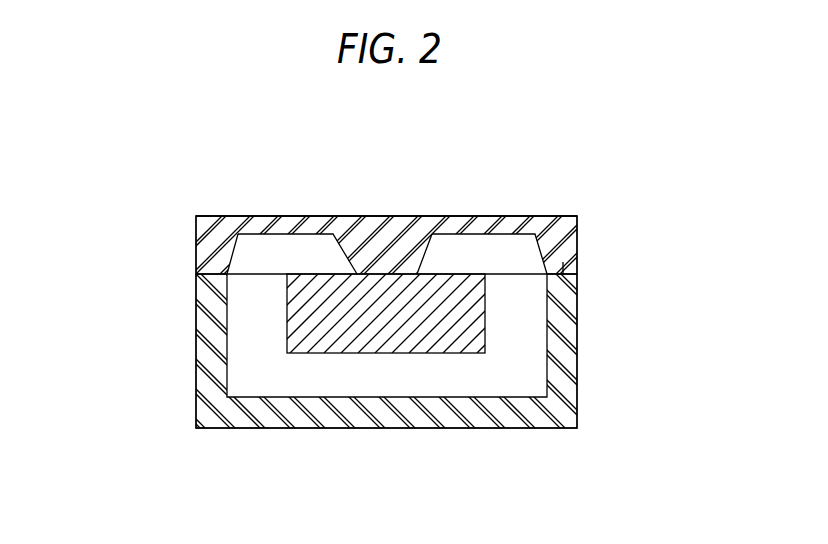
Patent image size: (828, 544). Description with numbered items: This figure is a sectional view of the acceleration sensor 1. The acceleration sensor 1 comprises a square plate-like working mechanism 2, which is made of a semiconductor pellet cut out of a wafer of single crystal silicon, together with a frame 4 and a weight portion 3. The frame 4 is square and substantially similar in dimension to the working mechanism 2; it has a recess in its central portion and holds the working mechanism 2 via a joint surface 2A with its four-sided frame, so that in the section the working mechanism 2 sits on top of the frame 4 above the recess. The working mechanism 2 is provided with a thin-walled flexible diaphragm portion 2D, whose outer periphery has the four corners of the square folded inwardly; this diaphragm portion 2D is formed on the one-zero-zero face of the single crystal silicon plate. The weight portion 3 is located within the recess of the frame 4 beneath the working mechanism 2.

The acceleration sensor 1 is at (554, 172).
The working mechanism 2 is at (330, 210).
The joint surface 2A is at (213, 273).
The diaphragm portion 2D is at (460, 216).
The weight portion 3 is at (395, 340).
The frame 4 is at (568, 316).